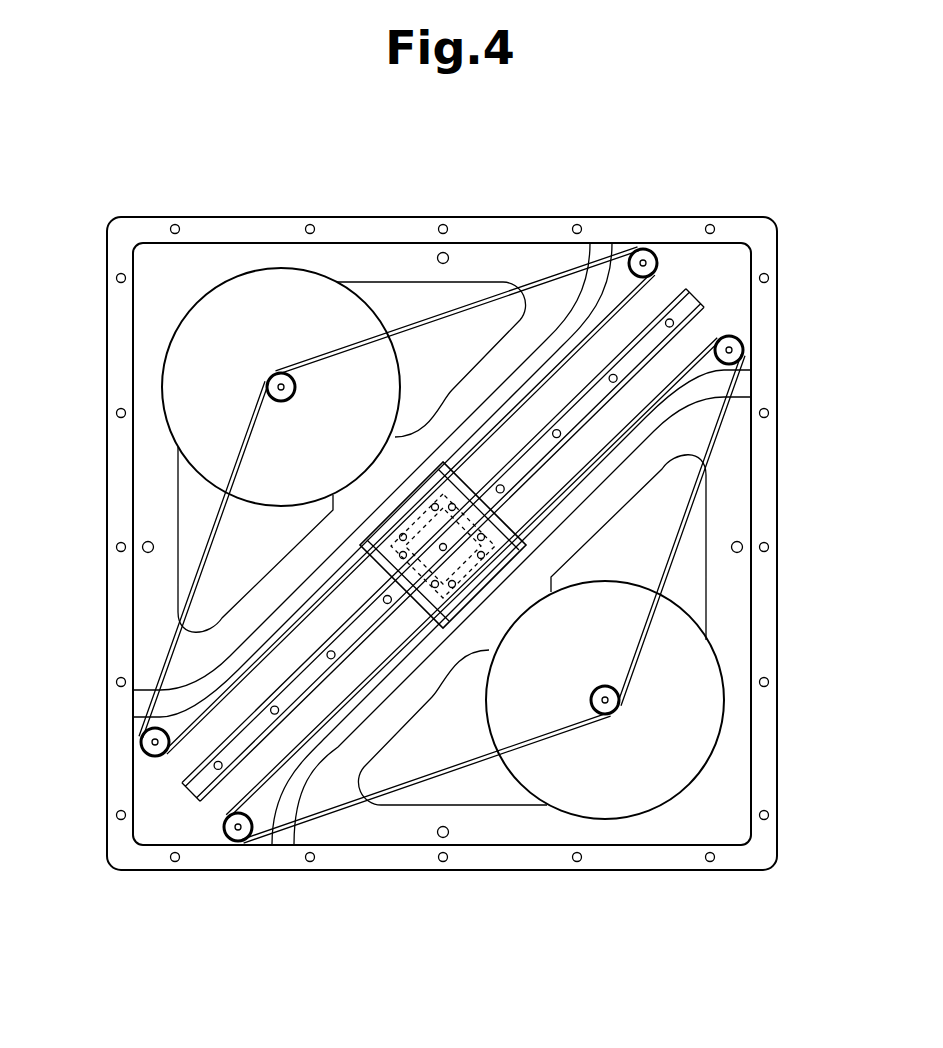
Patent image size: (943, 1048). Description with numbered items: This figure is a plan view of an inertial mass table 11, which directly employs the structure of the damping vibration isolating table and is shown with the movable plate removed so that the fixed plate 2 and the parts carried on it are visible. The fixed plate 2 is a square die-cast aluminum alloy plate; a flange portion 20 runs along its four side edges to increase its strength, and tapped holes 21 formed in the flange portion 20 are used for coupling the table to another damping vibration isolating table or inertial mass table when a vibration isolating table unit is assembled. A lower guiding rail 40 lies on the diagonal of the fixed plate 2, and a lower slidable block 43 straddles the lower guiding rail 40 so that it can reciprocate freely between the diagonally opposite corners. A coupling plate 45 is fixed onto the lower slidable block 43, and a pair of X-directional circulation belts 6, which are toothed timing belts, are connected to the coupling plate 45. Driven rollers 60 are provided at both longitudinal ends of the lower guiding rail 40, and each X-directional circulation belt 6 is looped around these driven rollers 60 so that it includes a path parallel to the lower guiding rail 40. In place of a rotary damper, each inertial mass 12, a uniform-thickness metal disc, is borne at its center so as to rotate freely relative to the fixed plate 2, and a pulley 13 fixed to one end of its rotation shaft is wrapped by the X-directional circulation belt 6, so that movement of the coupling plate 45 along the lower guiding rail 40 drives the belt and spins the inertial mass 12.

The fixed plate 2 is at (231, 216).
The X-directional circulation belt 6 is at (416, 324).
The inertial mass table 11 is at (637, 203).
The inertial mass 12 is at (287, 264).
The pulley 13 is at (285, 401).
The flange portion 20 is at (511, 241).
The tapped holes 21 is at (769, 279).
The lower guiding rail 40 is at (537, 457).
The lower slidable block 43 is at (481, 582).
The coupling plate 45 is at (418, 612).
The driven rollers 60 is at (141, 742).